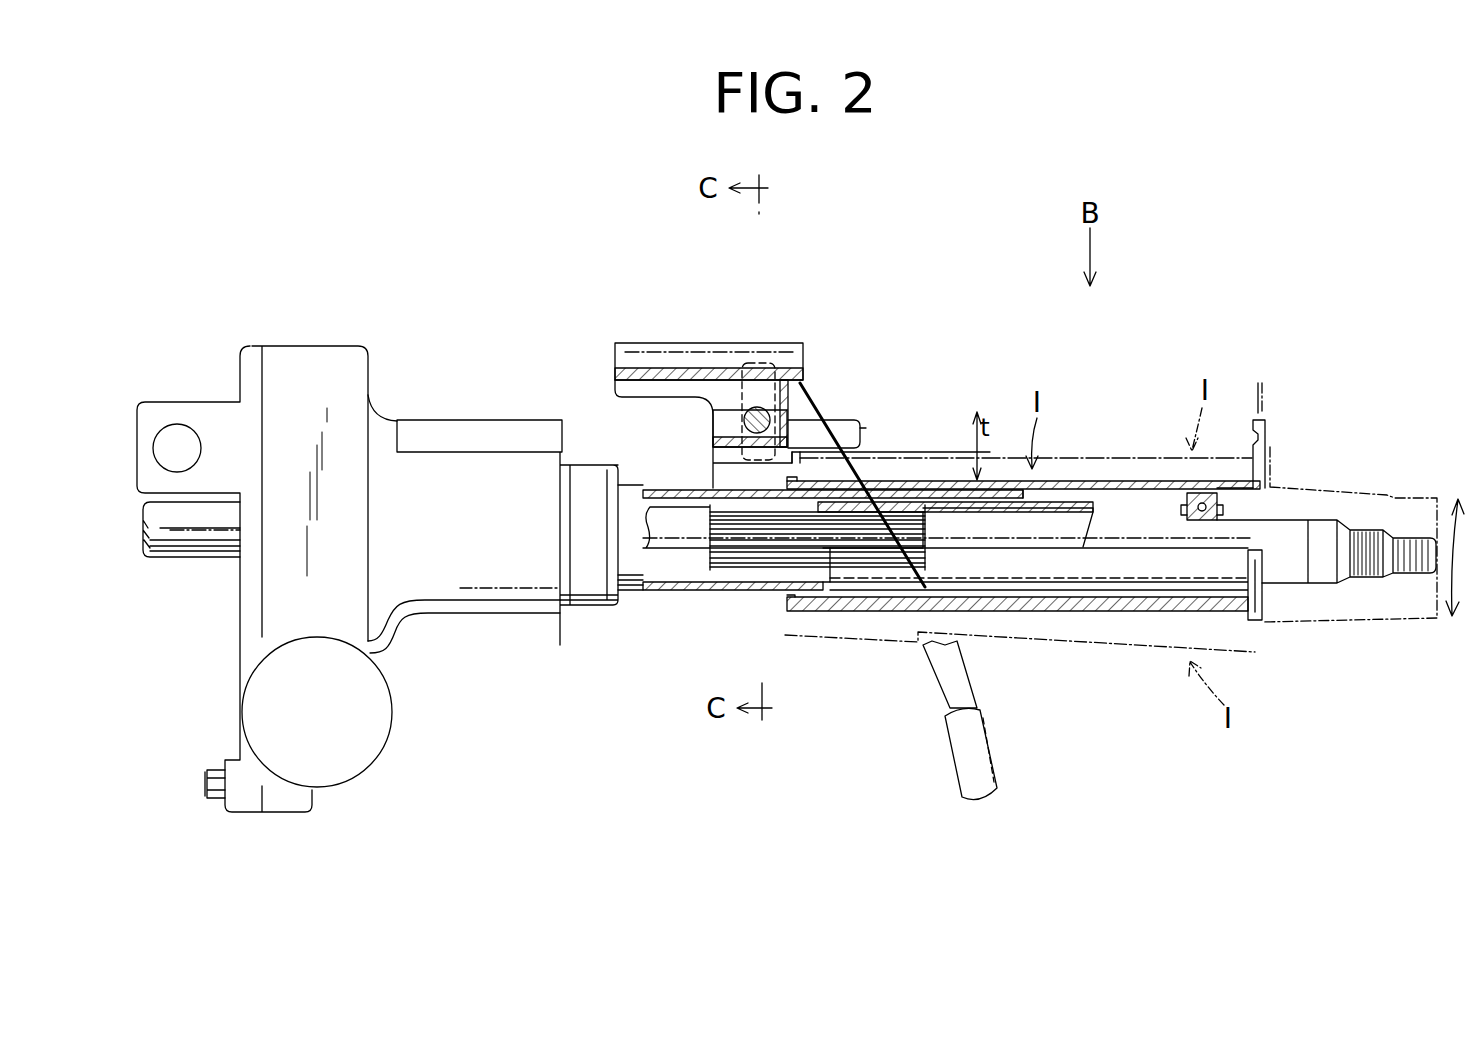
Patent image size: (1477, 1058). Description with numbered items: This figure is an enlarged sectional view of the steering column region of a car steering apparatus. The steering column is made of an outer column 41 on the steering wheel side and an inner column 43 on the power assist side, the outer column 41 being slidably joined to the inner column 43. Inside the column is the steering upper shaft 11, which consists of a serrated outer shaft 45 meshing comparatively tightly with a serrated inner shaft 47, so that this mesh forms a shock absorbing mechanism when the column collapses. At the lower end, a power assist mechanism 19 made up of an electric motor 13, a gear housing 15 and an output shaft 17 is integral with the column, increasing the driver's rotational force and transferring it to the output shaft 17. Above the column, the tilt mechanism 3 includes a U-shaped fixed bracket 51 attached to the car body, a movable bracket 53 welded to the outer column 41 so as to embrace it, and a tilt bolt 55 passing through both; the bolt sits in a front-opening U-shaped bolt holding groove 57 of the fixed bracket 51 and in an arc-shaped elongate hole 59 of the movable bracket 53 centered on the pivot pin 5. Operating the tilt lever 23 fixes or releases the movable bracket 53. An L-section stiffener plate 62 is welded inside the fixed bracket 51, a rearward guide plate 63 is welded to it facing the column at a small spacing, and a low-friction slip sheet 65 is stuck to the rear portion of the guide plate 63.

The tilt mechanism 3 is at (903, 358).
The pivot pin 5 is at (180, 442).
The steering upper shaft 11 is at (1339, 512).
The electric motor 13 is at (352, 752).
The gear housing 15 is at (348, 358).
The output shaft 17 is at (182, 545).
The power assist mechanism 19 is at (444, 664).
The tilt lever 23 is at (985, 787).
The outer column 41 is at (1143, 598).
The inner column 43 is at (627, 587).
The outer shaft 45 is at (1122, 518).
The inner shaft 47 is at (672, 527).
The fixed bracket 51 is at (647, 343).
The movable bracket 53 is at (863, 480).
The tilt bolt 55 is at (752, 408).
The bolt holding groove 57 is at (725, 425).
The elongate hole 59 is at (785, 350).
The stiffener plate 62 is at (803, 400).
The guide plate 63 is at (840, 430).
The slip sheet 65 is at (866, 428).